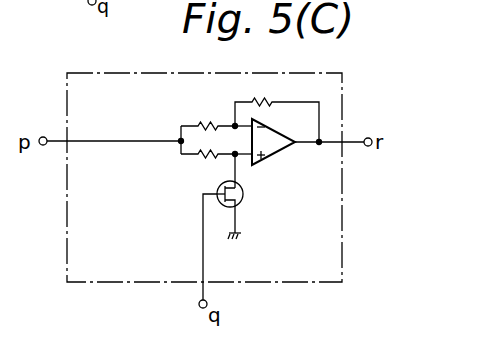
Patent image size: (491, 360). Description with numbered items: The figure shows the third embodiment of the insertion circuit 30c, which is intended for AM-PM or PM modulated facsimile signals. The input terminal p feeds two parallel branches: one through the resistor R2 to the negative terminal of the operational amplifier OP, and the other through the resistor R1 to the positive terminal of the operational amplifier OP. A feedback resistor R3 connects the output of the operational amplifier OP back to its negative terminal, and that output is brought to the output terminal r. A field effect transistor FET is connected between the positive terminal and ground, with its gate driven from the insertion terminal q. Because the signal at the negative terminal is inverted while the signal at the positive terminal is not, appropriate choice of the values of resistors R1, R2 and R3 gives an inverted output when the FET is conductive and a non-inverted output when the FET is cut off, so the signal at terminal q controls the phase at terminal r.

The insertion circuit 30c is at (342, 86).
The resistor R1 is at (208, 144).
The resistor R2 is at (208, 114).
The resistor R3 is at (277, 109).
The operational amplifier OP is at (283, 151).
The field effect transistor FET is at (254, 193).